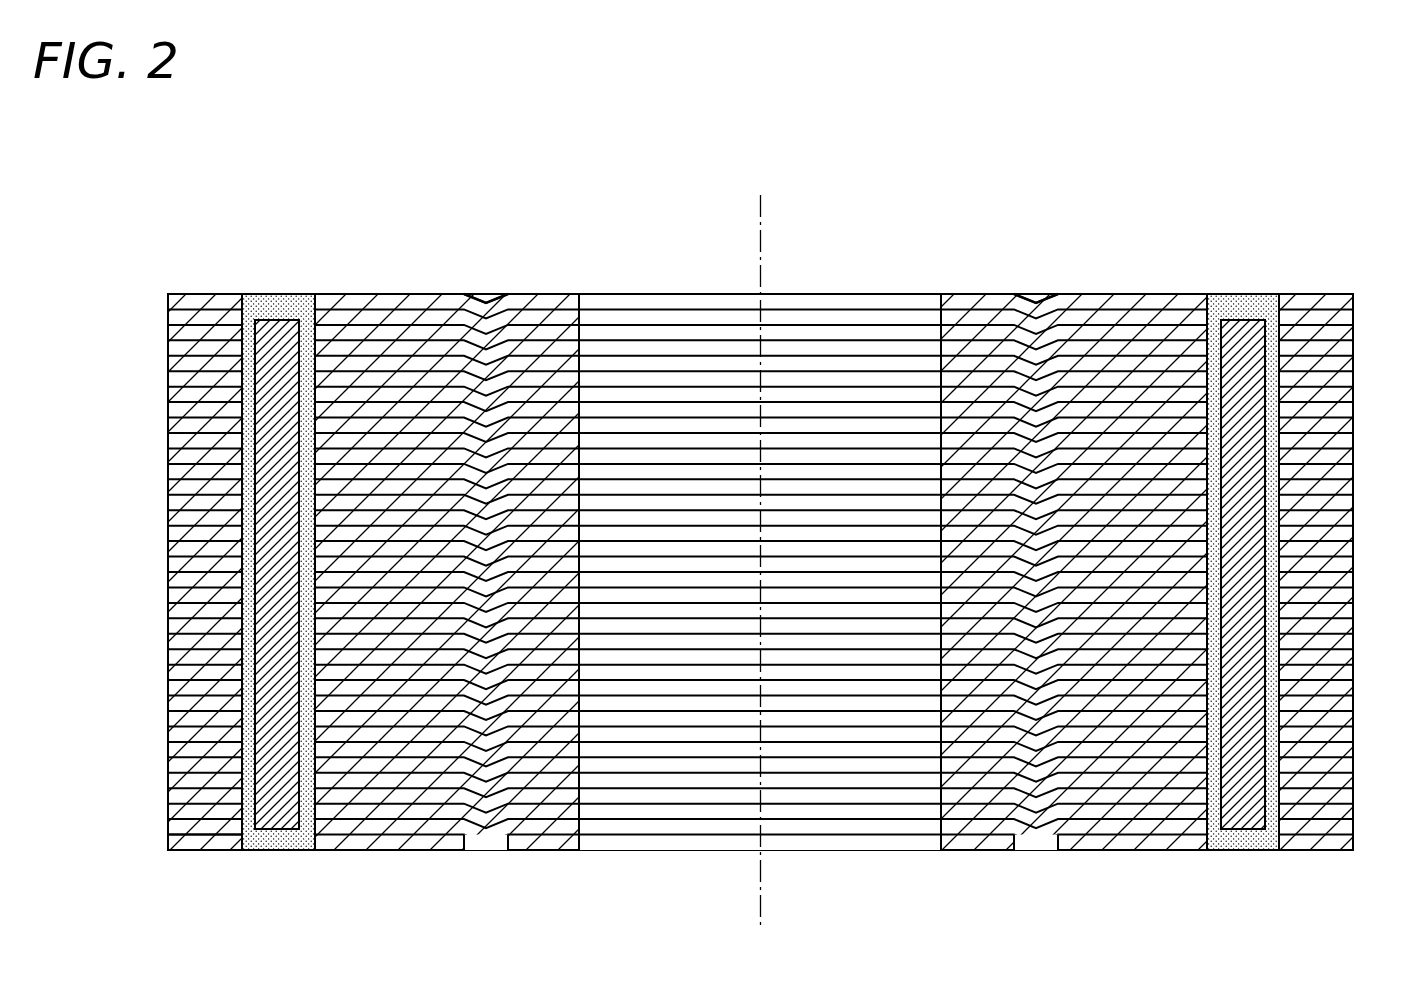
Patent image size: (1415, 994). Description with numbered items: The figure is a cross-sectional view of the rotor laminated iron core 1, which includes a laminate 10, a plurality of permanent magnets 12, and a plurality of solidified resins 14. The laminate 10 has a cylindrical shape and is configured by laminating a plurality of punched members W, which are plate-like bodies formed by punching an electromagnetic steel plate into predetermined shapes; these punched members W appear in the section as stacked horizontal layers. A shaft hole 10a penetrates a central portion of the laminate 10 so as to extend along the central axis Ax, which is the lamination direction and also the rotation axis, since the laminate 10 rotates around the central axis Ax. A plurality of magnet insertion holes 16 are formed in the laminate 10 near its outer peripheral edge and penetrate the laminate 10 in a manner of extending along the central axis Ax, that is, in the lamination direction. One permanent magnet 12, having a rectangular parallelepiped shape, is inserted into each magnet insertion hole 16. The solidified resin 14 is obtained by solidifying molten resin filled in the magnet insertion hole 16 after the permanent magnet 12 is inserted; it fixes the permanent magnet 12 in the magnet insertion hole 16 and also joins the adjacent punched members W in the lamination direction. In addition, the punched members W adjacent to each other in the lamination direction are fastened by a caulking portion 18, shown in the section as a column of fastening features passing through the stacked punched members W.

The rotor laminated iron core 1 is at (1246, 180).
The laminate 10 is at (733, 507).
The shaft hole 10a is at (898, 272).
The permanent magnet 12 is at (265, 350).
The solidified resin 14 is at (252, 851).
The magnet insertion hole 16 is at (762, 564).
The caulking portion 18 is at (482, 272).
The punched member W is at (172, 841).
The central axis Ax is at (762, 212).